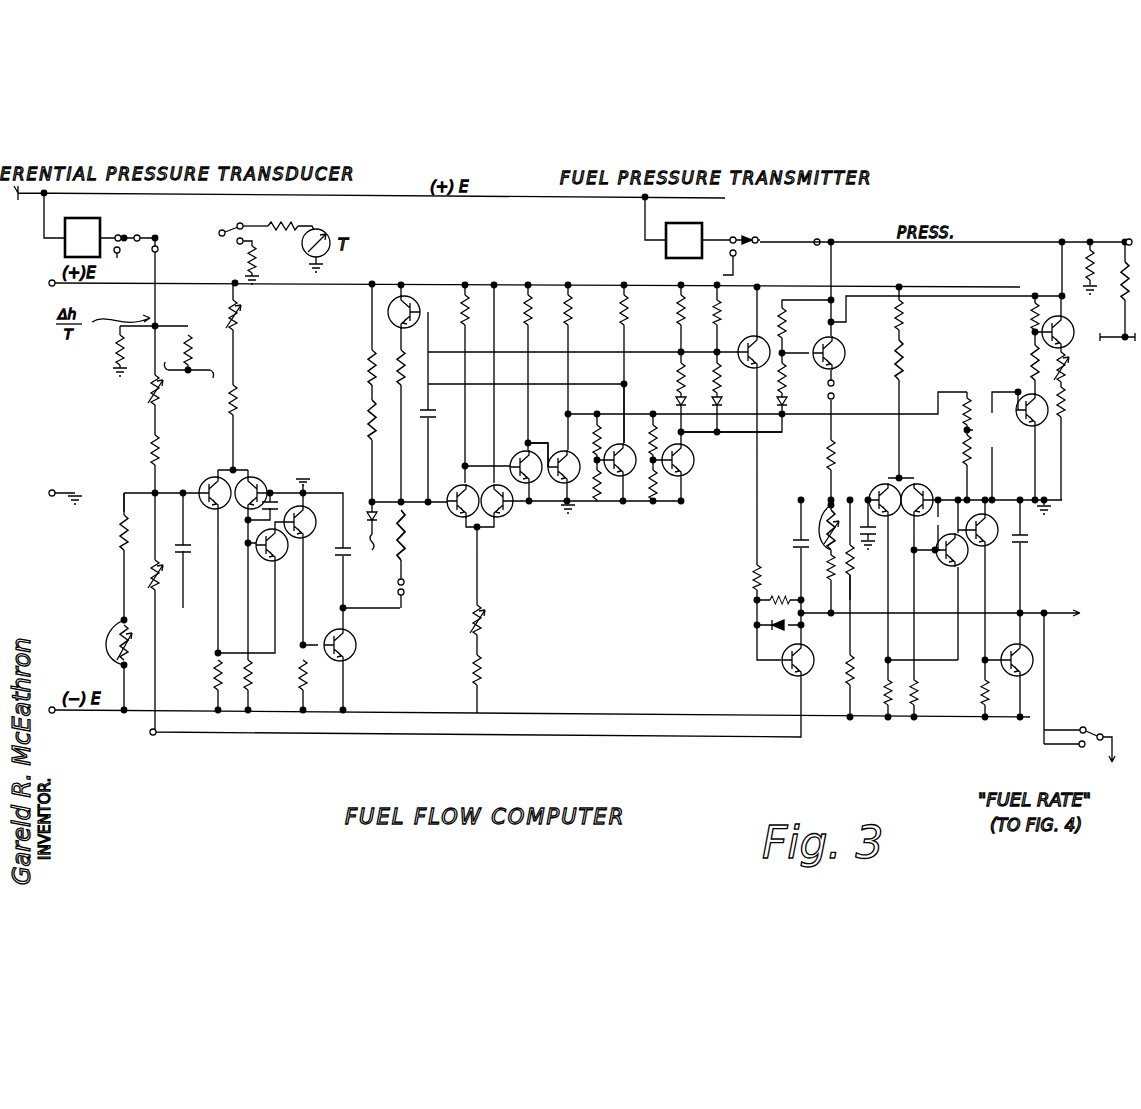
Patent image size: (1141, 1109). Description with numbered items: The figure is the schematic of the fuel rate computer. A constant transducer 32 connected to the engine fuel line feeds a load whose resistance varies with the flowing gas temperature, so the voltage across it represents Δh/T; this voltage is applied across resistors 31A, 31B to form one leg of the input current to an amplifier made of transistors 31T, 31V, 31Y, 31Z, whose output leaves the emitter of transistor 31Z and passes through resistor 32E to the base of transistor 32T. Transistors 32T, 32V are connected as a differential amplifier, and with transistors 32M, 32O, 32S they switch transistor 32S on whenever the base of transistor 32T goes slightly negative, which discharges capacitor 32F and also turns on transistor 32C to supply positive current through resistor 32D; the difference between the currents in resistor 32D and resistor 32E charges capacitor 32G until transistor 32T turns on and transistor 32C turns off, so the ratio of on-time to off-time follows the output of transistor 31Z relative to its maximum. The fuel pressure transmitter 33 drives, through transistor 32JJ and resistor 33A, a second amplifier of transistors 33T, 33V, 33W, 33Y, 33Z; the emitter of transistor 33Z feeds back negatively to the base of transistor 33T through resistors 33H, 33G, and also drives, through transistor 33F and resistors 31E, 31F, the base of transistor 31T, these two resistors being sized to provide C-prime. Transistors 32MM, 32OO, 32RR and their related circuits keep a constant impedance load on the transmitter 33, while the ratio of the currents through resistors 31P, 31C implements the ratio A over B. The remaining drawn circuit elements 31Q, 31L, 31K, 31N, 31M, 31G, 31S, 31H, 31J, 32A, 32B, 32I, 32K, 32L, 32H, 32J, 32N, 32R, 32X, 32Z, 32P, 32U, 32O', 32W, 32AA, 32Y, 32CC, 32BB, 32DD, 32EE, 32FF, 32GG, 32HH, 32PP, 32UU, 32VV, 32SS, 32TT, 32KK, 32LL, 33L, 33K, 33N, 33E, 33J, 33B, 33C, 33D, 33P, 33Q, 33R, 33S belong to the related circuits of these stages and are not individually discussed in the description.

The constant transducer 32 is at (62, 243).
The fuel pressure transmitter 33 is at (706, 235).
The resistor 31P is at (114, 358).
The resistor 31Q is at (206, 352).
The variable resistor 31L is at (264, 338).
The resistor 31A is at (141, 408).
The resistor 31K is at (253, 400).
The resistor 31B is at (141, 456).
The resistor 31F is at (142, 516).
The resistor 31C is at (114, 540).
The resistor 31E is at (146, 574).
The transistor 31T is at (196, 490).
The transistor 31V is at (264, 490).
The transistor 31Y is at (330, 524).
The capacitor 31N is at (196, 555).
The transistor 31M is at (268, 562).
The capacitor 31G is at (338, 554).
The transistor 31Z is at (356, 655).
The resistor 31S is at (214, 678).
The resistor 31H is at (272, 686).
The resistor 31J is at (316, 670).
The resistor 32A is at (356, 370).
The resistor 32B is at (351, 426).
The diode 32I is at (372, 528).
The transistor 32C is at (422, 294).
The resistor 32D is at (420, 376).
The capacitor 32F is at (440, 418).
The capacitor 32G is at (455, 525).
The resistor 32E is at (431, 548).
The transistor 32T is at (480, 534).
The variable resistor 32K is at (500, 631).
The resistor 32L is at (497, 681).
The resistor 32H is at (450, 296).
The resistor 32J is at (536, 296).
The resistor 32N is at (579, 298).
The resistor 32R is at (636, 298).
The resistor 32X is at (670, 314).
The conductor 32Z is at (664, 398).
The resistor 32P is at (606, 429).
The resistor 32U is at (664, 429).
The transistor 32O is at (545, 442).
The transistor 32V is at (530, 508).
The transistor 32M is at (558, 496).
The resistor 32O' is at (614, 501).
The transistor 32S is at (632, 490).
The resistor 32W is at (658, 498).
The transistor 32AA is at (690, 468).
The resistor and diode 32Y is at (688, 374).
The resistor and diode 32CC is at (736, 370).
The resistor 32BB is at (729, 294).
The conductor 32DD is at (734, 430).
The transistor 32EE is at (744, 340).
The resistor 32FF is at (788, 340).
The resistor and diode 32GG is at (804, 392).
The resistor 32HH is at (828, 448).
The transistor 32JJ is at (862, 352).
The resistor 32PP is at (1042, 302).
The resistor 32UU is at (1080, 242).
The resistor 32VV is at (1120, 256).
The transistor 32RR is at (1096, 318).
The variable resistor 32SS is at (1068, 360).
The resistor 32TT is at (1064, 400).
The transistor 32OO is at (1044, 430).
The transistor 32MM is at (1016, 396).
The resistor 32KK is at (960, 424).
The resistor 32LL is at (960, 451).
The resistor 33L is at (906, 328).
The resistor 33K is at (906, 370).
The resistor 33A is at (836, 470).
The transistor 33T is at (878, 484).
The resistor 33G is at (820, 508).
The capacitor 33N is at (865, 500).
The transistor 33V is at (930, 496).
The capacitor 33E is at (798, 538).
The resistor 33J is at (860, 558).
The resistor 33H is at (850, 584).
The transistor 33W is at (946, 562).
The transistor 33Y is at (1020, 548).
The resistor 33B is at (752, 570).
The resistor 33C is at (756, 600).
The diode 33D is at (756, 626).
The transistor 33F is at (782, 680).
The resistor 33P is at (842, 676).
The resistor 33Q is at (874, 708).
The resistor 33R is at (932, 708).
The resistor 33S is at (978, 704).
The transistor 33Z is at (1036, 670).